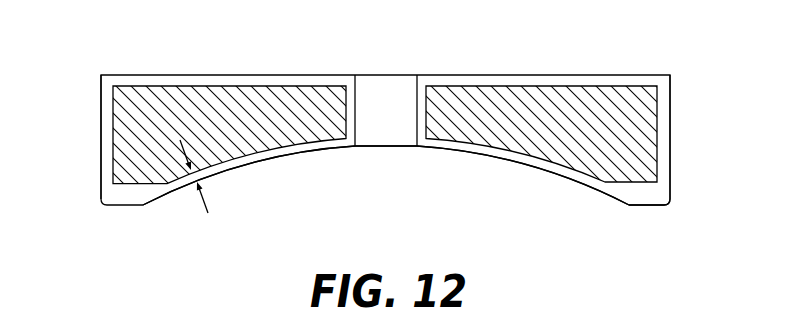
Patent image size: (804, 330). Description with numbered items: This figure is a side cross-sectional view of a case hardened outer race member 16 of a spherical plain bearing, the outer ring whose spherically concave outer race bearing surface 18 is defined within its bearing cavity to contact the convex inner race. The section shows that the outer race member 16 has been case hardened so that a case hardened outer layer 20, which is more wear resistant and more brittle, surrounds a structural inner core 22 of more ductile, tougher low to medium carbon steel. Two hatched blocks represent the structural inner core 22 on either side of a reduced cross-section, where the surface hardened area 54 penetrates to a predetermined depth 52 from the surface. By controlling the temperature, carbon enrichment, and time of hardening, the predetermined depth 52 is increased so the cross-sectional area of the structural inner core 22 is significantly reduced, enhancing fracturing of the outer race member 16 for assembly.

The outer race member 16 is at (127, 75).
The outer race bearing surface 18 is at (330, 148).
The case hardened outer layer 20 is at (108, 137).
The structural inner core 22 is at (233, 103).
The predetermined depth 52 is at (194, 175).
The surface hardened area 54 is at (653, 78).